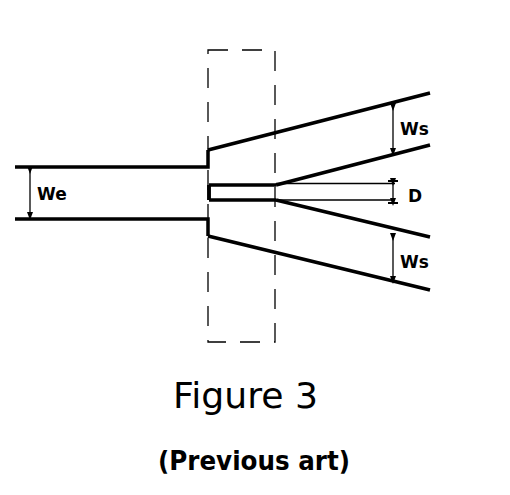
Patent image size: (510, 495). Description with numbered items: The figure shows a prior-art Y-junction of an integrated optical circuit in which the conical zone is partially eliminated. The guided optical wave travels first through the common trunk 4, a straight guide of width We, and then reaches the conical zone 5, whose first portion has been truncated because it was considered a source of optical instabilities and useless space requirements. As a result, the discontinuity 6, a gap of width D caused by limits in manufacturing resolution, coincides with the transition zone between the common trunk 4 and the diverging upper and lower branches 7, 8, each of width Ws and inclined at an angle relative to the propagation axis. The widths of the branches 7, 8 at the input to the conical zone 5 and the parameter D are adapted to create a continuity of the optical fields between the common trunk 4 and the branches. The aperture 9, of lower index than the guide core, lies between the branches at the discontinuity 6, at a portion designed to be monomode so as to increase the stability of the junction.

The common trunk 4 is at (128, 195).
The conical zone 5 is at (237, 277).
The discontinuity 6 is at (207, 193).
The upper branch 7 is at (290, 152).
The lower branch 8 is at (292, 235).
The aperture 9 is at (253, 193).